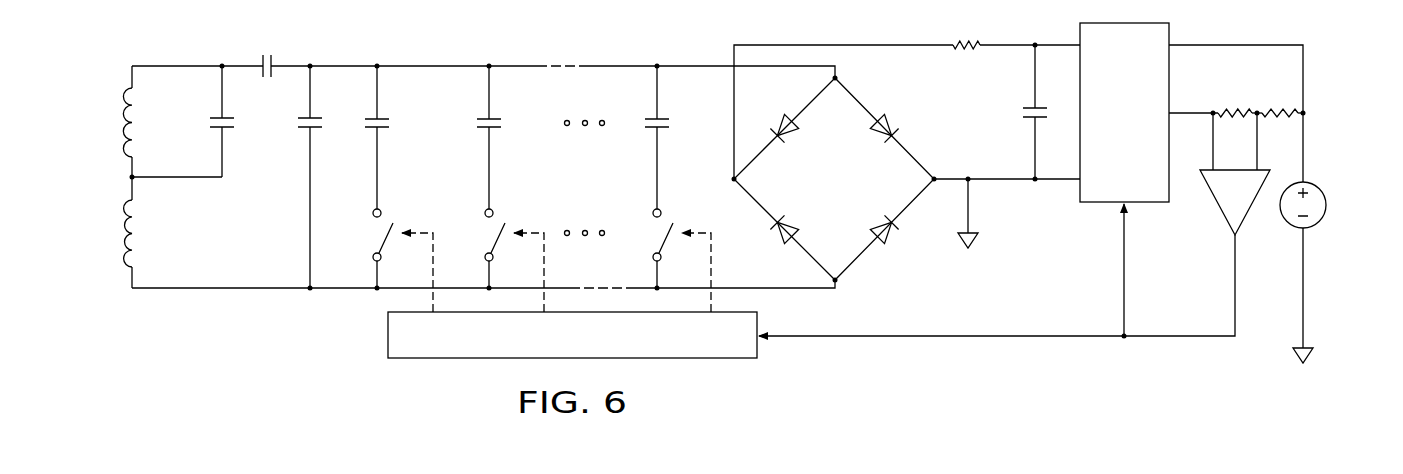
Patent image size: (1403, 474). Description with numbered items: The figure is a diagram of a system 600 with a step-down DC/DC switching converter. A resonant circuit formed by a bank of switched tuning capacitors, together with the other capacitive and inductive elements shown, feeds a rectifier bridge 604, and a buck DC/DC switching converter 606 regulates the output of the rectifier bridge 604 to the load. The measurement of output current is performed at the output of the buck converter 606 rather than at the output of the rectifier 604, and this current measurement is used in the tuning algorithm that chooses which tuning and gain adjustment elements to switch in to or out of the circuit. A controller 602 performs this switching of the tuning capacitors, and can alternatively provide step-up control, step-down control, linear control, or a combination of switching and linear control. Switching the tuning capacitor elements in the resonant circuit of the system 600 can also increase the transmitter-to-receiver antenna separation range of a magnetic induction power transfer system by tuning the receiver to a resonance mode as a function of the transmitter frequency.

The system 600 is at (146, 343).
The controller 602 is at (387, 336).
The rectifier bridge 604 is at (892, 259).
The buck DC/DC switching converter 606 is at (1065, 193).